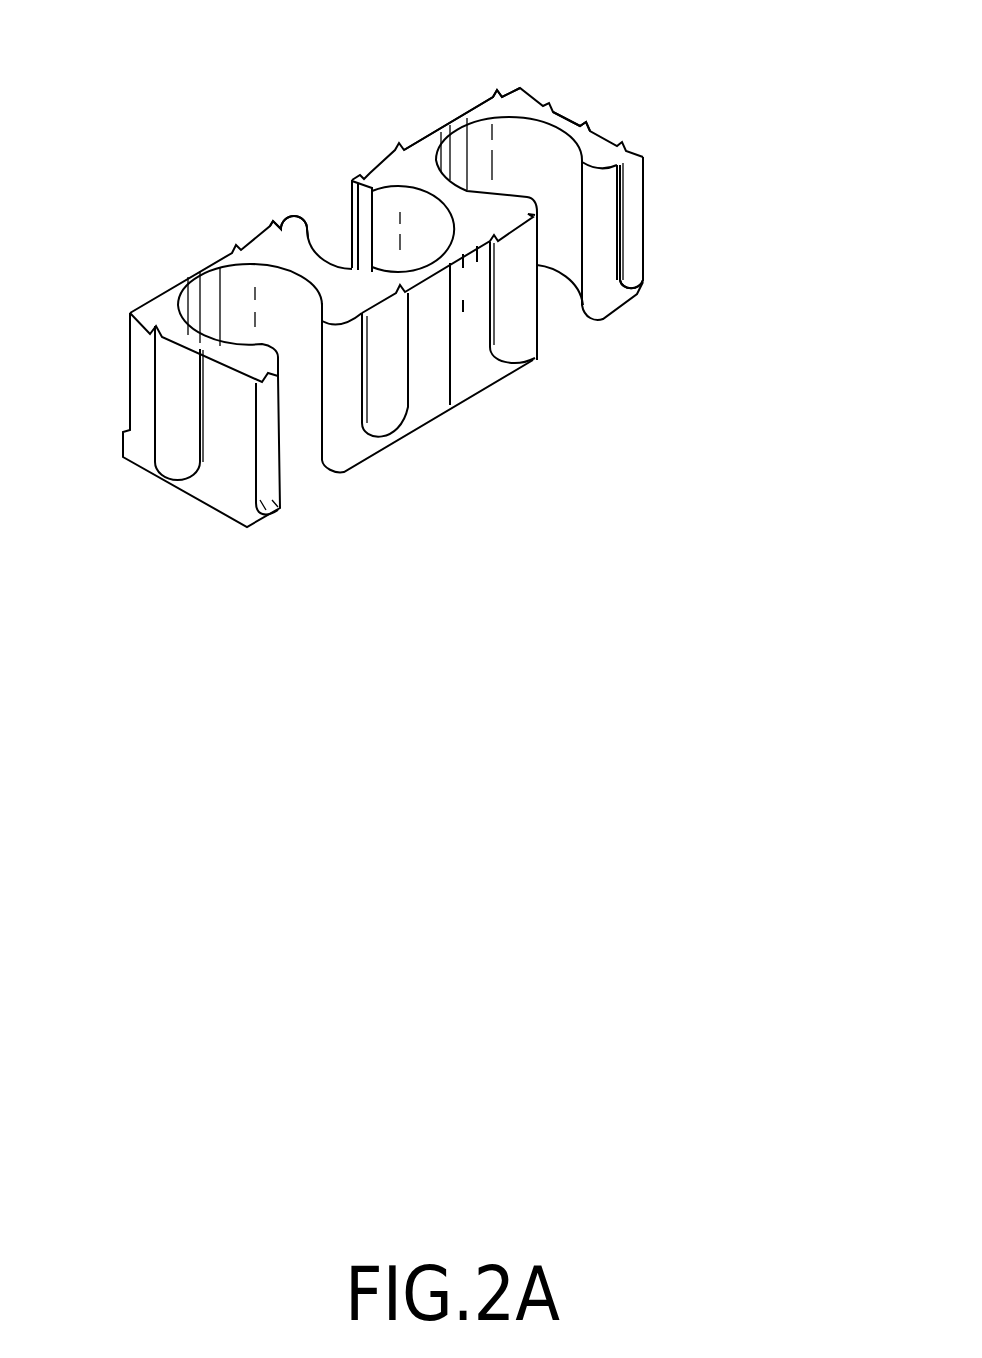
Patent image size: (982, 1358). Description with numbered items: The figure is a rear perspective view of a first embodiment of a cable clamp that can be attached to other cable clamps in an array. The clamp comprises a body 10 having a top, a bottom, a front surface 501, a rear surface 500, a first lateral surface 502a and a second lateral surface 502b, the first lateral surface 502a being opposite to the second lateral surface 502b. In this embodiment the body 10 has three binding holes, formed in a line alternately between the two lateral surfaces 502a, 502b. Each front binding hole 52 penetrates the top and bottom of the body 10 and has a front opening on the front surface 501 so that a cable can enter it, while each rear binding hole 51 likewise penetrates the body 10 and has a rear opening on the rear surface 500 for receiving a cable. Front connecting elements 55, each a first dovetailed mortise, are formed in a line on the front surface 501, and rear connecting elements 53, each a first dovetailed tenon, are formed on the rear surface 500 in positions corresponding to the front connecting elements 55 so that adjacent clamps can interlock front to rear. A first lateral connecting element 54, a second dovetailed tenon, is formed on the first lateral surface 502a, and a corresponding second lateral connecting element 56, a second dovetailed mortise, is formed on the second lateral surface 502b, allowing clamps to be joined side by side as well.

The body 10 is at (345, 115).
The rear binding hole 51 is at (213, 290).
The front binding hole 52 is at (353, 267).
The rear connecting element 53 is at (530, 357).
The first lateral connecting element 54 is at (177, 457).
The front connecting element 55 is at (257, 240).
The second lateral connecting element 56 is at (573, 130).
The rear surface 500 is at (450, 407).
The front surface 501 is at (470, 107).
The first lateral surface 502a is at (237, 500).
The second lateral surface 502b is at (633, 150).